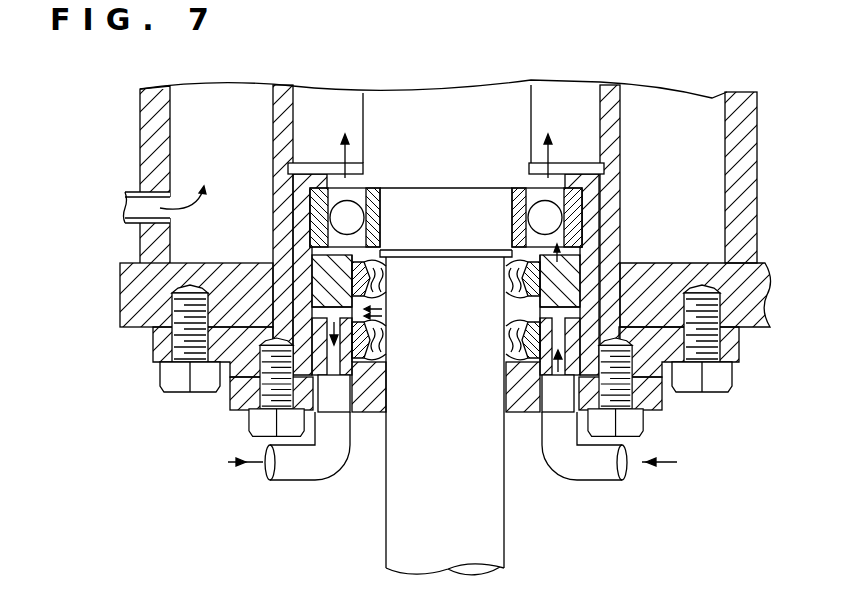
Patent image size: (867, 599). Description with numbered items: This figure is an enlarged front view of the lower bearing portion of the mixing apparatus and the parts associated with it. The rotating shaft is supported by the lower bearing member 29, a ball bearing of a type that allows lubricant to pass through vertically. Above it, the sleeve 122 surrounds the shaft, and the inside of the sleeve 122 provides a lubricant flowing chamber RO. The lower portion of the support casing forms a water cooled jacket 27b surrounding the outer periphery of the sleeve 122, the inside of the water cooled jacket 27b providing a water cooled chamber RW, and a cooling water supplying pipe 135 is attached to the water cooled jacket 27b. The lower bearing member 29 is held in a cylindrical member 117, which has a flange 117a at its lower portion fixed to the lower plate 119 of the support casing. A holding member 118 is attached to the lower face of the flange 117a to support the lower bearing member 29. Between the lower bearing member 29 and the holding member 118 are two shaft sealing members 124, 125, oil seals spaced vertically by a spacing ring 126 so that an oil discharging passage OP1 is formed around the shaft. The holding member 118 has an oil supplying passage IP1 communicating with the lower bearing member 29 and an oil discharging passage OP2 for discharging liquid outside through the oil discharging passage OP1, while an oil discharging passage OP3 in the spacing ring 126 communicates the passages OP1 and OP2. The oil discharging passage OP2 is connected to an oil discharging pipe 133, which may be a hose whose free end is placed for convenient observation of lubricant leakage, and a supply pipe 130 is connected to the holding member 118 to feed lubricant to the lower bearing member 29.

The water cooled jacket 27b is at (140, 144).
The cooling water supplying pipe 135 is at (170, 204).
The cylindrical member 117 is at (293, 198).
The sleeve 122 is at (620, 140).
The water cooled chamber RW is at (680, 108).
The lubricant flowing chamber RO is at (566, 92).
The lower bearing member 29 is at (592, 214).
The oil supplying passage IP1 is at (618, 251).
The oil discharging passage OP1 is at (372, 312).
The oil discharging passage OP2 is at (372, 386).
The oil discharging passage OP3 is at (366, 268).
The shaft sealing member 124 is at (372, 290).
The shaft sealing member 125 is at (370, 361).
The spacing ring 126 is at (372, 340).
The lower plate 119 is at (133, 327).
The flange 117a is at (232, 368).
The holding member 118 is at (366, 412).
The oil discharging pipe 133 is at (302, 481).
The supply pipe 130 is at (564, 481).